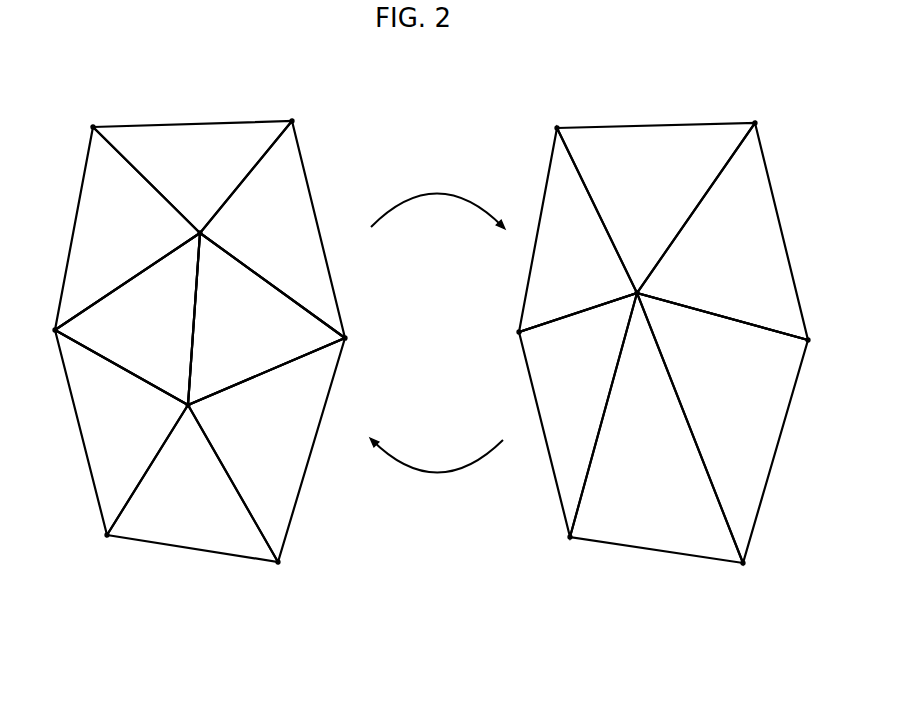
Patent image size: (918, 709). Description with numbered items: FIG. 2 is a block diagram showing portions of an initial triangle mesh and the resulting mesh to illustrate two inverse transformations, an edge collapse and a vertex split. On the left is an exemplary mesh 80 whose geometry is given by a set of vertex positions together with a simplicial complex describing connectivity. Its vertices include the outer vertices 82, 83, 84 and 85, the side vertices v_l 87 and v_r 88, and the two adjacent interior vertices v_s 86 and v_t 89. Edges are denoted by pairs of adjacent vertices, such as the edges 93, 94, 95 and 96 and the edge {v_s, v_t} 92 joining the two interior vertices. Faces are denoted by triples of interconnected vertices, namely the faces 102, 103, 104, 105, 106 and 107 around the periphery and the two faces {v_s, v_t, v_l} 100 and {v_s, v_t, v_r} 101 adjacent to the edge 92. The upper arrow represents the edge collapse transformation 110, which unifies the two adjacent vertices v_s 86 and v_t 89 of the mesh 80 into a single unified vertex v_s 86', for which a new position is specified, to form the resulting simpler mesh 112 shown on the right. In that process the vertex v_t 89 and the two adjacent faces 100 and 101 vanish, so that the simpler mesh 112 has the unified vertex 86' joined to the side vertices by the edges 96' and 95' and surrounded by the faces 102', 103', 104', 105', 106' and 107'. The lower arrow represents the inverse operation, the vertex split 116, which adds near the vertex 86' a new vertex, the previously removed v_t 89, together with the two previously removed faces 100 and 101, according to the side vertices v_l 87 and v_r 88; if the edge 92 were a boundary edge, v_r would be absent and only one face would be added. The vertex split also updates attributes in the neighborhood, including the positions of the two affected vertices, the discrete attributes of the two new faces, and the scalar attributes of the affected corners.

The mesh 80 is at (213, 343).
The vertex 82 is at (93, 125).
The vertex 83 is at (292, 119).
The vertex 84 is at (278, 564).
The vertex 85 is at (107, 538).
The vertex v_s 86 is at (193, 410).
The side vertex v_l 87 is at (57, 330).
The side vertex v_r 88 is at (347, 338).
The vertex v_t 89 is at (203, 233).
The edge {v_s, v_t} 92 is at (193, 318).
The edge 93 is at (137, 271).
The edge 94 is at (267, 275).
The edge 95 is at (266, 375).
The edge 96 is at (121, 370).
The face {v_s, v_t, v_l} 100 is at (133, 332).
The face {v_s, v_t, v_r} 101 is at (230, 332).
The face 102 is at (127, 228).
The face 103 is at (121, 432).
The face 104 is at (272, 229).
The face 105 is at (266, 450).
The face 106 is at (192, 177).
The face 107 is at (192, 483).
The edge collapse transformation 110 is at (430, 199).
The resulting simpler mesh 112 is at (672, 344).
The vertex split transformation 116 is at (432, 462).
The unified vertex v_s 86' is at (668, 299).
The edge after collapse 95' is at (722, 313).
The edge after collapse 96' is at (578, 301).
The face after collapse 102' is at (578, 230).
The face after collapse 103' is at (578, 415).
The face after collapse 104' is at (722, 231).
The face after collapse 105' is at (722, 428).
The face after collapse 106' is at (656, 208).
The face after collapse 107' is at (656, 428).